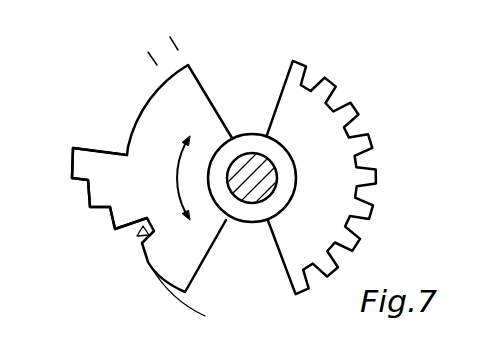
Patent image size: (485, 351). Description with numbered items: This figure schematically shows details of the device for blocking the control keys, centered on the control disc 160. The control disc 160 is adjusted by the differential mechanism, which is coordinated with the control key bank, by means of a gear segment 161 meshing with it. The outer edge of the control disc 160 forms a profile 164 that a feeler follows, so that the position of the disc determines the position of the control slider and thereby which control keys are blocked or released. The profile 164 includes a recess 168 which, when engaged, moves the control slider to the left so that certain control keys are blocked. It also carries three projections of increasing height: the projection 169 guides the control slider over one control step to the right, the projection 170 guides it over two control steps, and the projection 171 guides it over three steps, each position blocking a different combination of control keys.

The control disc 160 is at (185, 108).
The gear segment 161 is at (335, 207).
The profile 164 is at (193, 301).
The recess 168 is at (155, 230).
The projection 169 is at (115, 228).
The projection 170 is at (90, 208).
The projection 171 is at (72, 146).